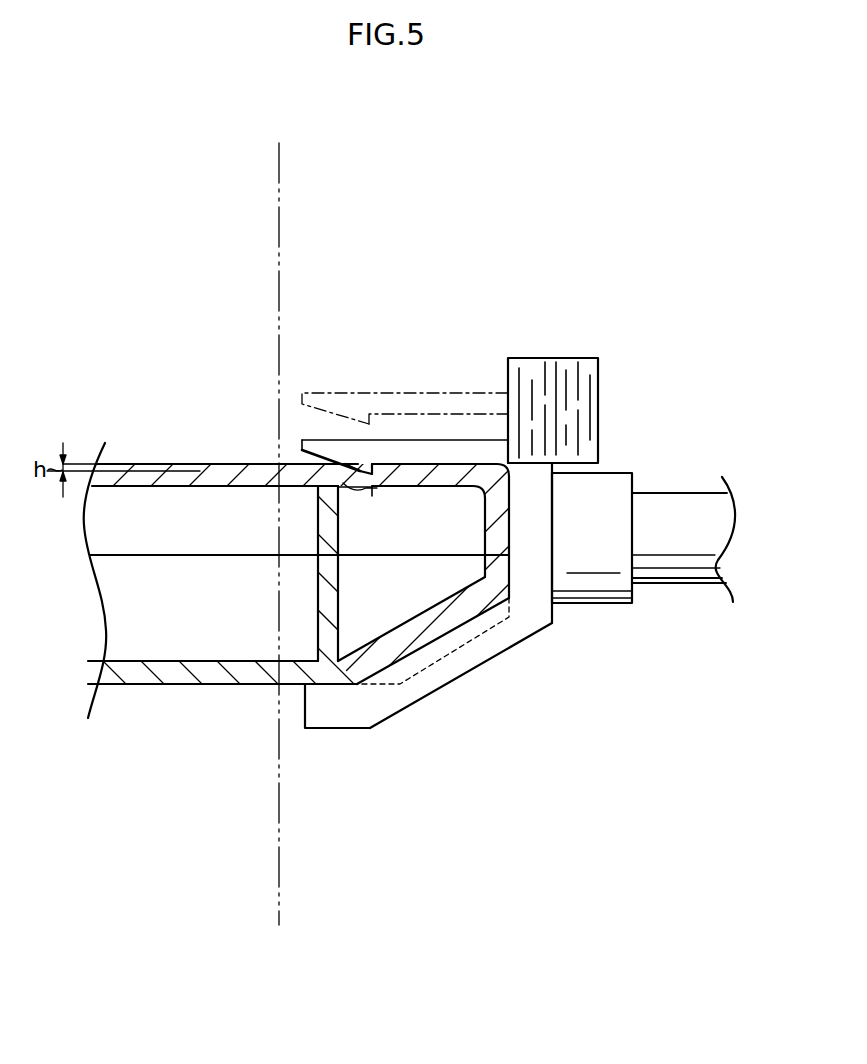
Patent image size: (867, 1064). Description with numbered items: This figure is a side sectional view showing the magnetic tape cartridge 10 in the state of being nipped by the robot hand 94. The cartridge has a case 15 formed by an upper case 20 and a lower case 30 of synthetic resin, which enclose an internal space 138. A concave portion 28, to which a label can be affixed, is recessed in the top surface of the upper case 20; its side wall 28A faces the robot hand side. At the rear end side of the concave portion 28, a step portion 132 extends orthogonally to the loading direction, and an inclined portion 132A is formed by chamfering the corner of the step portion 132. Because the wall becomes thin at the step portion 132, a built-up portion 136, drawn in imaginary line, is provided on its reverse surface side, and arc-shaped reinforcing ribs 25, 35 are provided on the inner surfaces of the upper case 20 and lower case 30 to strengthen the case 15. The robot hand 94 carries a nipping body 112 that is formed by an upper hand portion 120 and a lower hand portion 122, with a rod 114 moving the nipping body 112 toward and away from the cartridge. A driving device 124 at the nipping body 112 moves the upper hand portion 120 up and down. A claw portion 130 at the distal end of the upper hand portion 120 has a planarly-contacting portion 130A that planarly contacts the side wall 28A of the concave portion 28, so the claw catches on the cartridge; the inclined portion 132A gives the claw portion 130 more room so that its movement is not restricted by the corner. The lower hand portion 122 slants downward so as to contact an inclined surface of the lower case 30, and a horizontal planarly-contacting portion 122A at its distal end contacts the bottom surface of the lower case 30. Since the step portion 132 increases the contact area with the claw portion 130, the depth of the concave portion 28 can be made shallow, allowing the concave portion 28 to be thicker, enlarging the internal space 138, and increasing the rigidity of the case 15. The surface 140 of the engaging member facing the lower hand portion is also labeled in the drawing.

The magnetic tape cartridge 10 is at (196, 384).
The case 15 is at (369, 569).
The upper case 20 is at (232, 478).
The lower case 30 is at (218, 673).
The internal space 138 is at (242, 606).
The arc-shaped reinforcing rib 25 is at (330, 540).
The arc-shaped reinforcing rib 35 is at (325, 604).
The concave portion 28 is at (207, 464).
The side wall of the concave portion 28A is at (372, 496).
The inclined portion 132A is at (335, 481).
The built-up portion 136 is at (365, 503).
The inclined surface of engaging member 140 is at (444, 637).
The step portion 132 is at (360, 440).
The upper hand portion 120 is at (400, 355).
The claw portion 130 is at (312, 397).
The planarly-contacting portion of the claw portion 130A is at (370, 414).
The robot hand 94 is at (600, 337).
The driving device 124 is at (590, 406).
The nipping body 112 is at (521, 648).
The lower hand portion 122 is at (452, 668).
The planarly-contacting portion 122A is at (330, 684).
The rod 114 is at (692, 576).